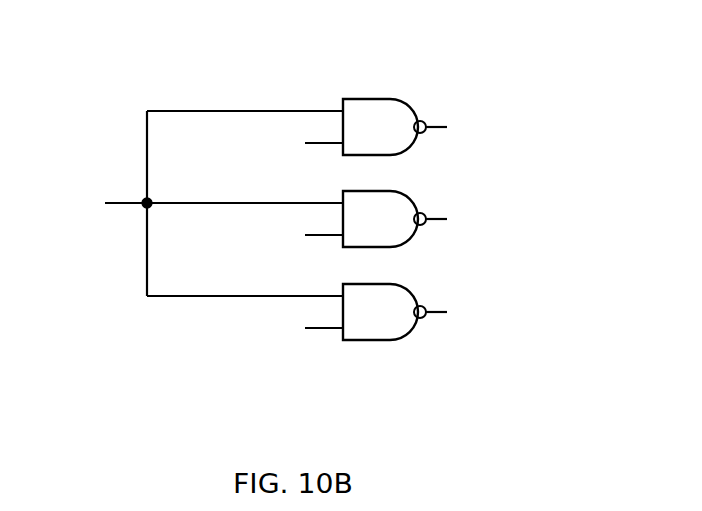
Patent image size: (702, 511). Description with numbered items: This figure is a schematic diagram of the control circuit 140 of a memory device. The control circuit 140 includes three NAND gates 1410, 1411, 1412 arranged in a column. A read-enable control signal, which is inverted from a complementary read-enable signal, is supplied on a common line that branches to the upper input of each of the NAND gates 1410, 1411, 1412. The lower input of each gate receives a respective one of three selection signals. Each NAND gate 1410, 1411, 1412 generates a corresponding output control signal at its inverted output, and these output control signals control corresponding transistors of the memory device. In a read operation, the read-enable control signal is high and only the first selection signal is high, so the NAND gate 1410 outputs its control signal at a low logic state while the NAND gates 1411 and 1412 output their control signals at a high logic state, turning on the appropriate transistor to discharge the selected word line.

The control circuit 140 is at (101, 74).
The NAND gate 1410 is at (397, 140).
The NAND gate 1411 is at (397, 232).
The NAND gate 1412 is at (397, 325).